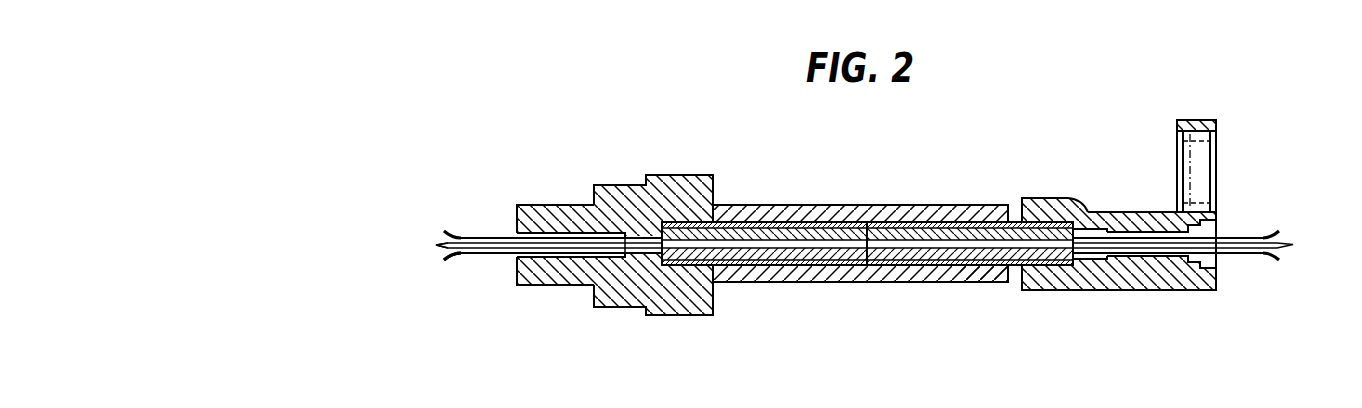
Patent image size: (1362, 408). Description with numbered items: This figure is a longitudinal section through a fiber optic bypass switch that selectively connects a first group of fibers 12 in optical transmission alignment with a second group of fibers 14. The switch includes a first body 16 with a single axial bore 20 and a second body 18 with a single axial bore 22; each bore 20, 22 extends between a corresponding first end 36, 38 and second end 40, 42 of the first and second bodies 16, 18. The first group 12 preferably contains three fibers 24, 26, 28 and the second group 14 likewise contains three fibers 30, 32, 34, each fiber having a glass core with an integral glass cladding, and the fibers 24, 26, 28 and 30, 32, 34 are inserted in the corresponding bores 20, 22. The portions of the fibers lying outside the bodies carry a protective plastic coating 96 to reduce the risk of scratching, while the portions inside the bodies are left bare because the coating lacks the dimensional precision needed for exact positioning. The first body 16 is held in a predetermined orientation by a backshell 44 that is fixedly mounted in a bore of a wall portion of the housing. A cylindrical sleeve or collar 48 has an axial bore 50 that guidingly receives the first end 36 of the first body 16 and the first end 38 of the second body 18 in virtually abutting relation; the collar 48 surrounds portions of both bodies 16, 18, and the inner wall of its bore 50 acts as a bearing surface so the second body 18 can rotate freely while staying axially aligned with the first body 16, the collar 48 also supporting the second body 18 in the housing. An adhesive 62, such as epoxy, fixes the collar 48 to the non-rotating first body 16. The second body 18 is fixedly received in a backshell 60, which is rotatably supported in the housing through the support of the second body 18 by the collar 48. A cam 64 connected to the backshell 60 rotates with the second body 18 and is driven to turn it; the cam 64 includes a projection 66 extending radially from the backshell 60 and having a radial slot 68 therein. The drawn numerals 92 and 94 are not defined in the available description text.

The first group of fibers 12 is at (427, 240).
The second group of fibers 14 is at (1244, 270).
The first body 16 is at (783, 270).
The second body 18 is at (917, 215).
The axial bore 20 is at (817, 265).
The axial bore 22 is at (947, 265).
The fiber 24 is at (457, 235).
The fiber 26 is at (437, 258).
The fiber 28 is at (458, 264).
The fiber 30 is at (1276, 227).
The fiber 32 is at (1295, 243).
The fiber 34 is at (1272, 258).
The first end 36 is at (852, 268).
The first end 38 is at (877, 262).
The second end 40 is at (655, 258).
The second end 42 is at (1085, 210).
The backshell 44 is at (633, 190).
The cylindrical collar 48 is at (880, 222).
The axial bore 50 is at (920, 268).
The backshell 60 is at (1125, 212).
The adhesive 62 is at (810, 210).
The cam 64 is at (1196, 108).
The projection 66 is at (1182, 120).
The radial slot 68 is at (1197, 167).
The end wall 92 is at (993, 270).
The housing end portion 94 is at (980, 273).
The protective plastic coating 96 is at (548, 252).